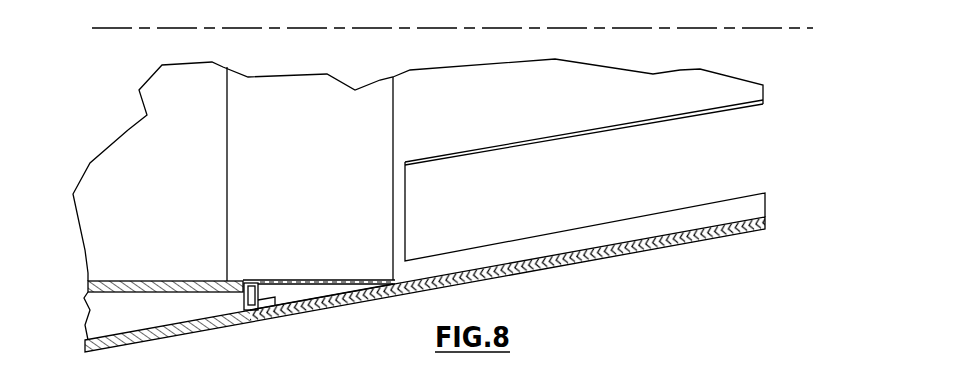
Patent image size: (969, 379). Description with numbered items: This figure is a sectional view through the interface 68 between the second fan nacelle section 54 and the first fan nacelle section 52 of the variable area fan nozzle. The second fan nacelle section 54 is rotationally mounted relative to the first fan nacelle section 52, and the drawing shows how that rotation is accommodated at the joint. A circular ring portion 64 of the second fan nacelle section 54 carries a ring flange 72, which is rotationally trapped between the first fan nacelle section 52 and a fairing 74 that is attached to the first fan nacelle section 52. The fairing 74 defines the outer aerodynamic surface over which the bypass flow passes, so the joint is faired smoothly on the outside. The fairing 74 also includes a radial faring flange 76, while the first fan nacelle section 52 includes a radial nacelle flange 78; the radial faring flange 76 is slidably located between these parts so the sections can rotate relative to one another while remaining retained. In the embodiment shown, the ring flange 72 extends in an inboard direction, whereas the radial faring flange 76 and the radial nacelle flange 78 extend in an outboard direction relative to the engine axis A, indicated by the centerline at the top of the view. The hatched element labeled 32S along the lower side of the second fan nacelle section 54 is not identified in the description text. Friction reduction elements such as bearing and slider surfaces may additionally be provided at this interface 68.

The axis A is at (739, 28).
The first fan nacelle section 52 is at (112, 312).
The second fan nacelle section 54 is at (781, 194).
The skin 32S is at (775, 218).
The circular ring portion 64 is at (313, 298).
The interface 68 is at (240, 335).
The ring flange 72 is at (270, 307).
The fairing 74 is at (315, 279).
The radial faring flange 76 is at (257, 290).
The radial nacelle flange 78 is at (247, 303).